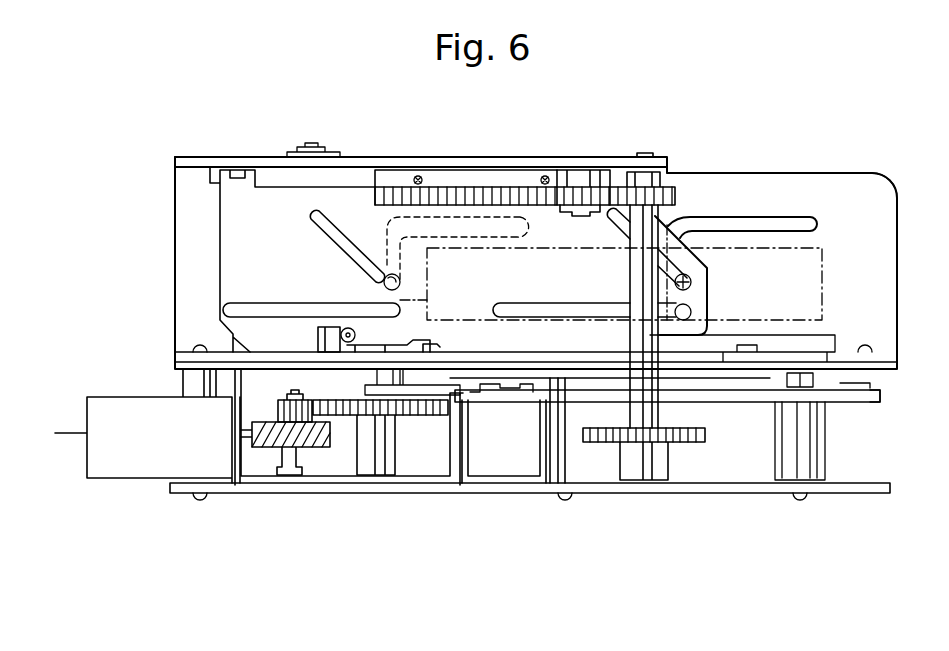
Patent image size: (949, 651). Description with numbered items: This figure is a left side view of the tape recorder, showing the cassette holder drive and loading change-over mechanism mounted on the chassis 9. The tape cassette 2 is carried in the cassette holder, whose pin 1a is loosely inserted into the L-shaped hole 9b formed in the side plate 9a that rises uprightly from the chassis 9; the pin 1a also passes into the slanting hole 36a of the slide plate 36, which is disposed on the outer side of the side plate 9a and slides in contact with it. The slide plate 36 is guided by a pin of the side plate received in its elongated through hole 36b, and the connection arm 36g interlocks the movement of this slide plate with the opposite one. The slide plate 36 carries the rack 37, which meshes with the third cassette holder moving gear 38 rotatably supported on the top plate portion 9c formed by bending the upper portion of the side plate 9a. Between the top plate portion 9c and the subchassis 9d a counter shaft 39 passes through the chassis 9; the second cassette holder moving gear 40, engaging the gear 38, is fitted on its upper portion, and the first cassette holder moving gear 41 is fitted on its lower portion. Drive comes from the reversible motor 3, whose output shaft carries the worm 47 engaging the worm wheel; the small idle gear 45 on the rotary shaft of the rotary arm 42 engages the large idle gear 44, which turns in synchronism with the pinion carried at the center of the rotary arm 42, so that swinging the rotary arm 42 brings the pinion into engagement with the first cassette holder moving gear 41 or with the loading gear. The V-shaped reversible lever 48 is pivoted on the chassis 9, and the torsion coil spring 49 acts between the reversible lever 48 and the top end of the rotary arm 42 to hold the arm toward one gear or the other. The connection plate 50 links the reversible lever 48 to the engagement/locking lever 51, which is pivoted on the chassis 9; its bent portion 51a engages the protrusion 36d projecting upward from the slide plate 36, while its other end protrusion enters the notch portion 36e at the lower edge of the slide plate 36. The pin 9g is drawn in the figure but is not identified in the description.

The pin 1a is at (383, 283).
The tape cassette 2 is at (818, 312).
The reversible motor 3 is at (150, 465).
The chassis 9 is at (893, 370).
The side plate 9a is at (742, 187).
The L-shaped hole 9b is at (790, 225).
The top plate portion 9c is at (372, 165).
The subchassis 9d is at (698, 490).
The pin 9g is at (692, 313).
The slide plate 36 is at (225, 232).
The slanting hole 36a is at (335, 238).
The elongated through hole 36b is at (242, 312).
The protrusion 36d is at (356, 335).
The notch portion 36e is at (590, 370).
The connection arm 36g is at (300, 150).
The rack 37 is at (465, 185).
The third cassette holder moving gear 38 is at (572, 185).
The counter shaft 39 is at (660, 410).
The second cassette holder moving gear 40 is at (672, 195).
The first cassette holder moving gear 41 is at (705, 444).
The rotary arm 42 is at (415, 478).
The large idle gear 44 is at (440, 418).
The small idle gear 45 is at (280, 410).
The worm 47 is at (335, 440).
The reversible lever 48 is at (845, 405).
The torsion coil spring 49 is at (505, 395).
The connection plate 50 is at (880, 400).
The engagement/locking lever 51 is at (440, 347).
The bent portion 51a is at (318, 338).